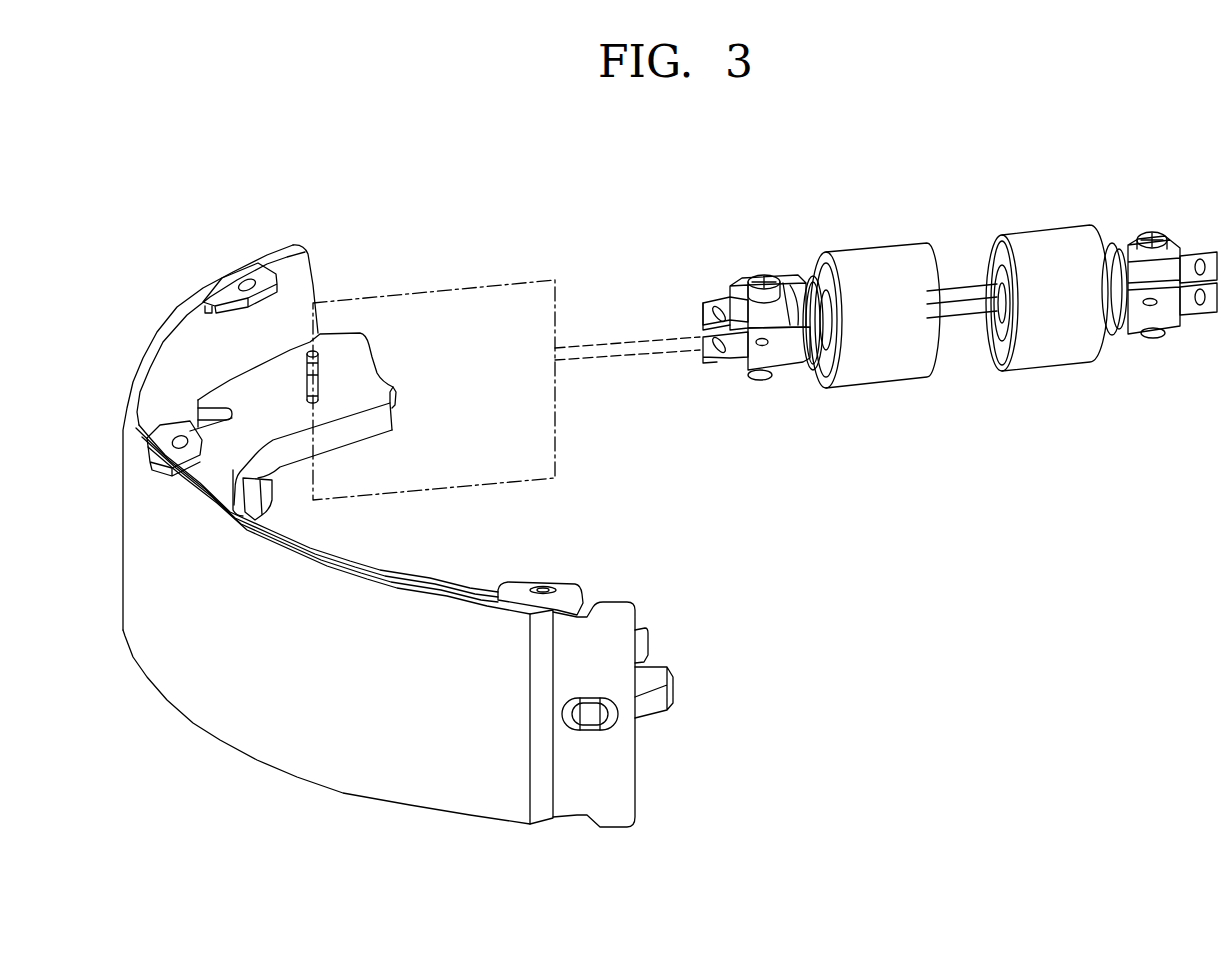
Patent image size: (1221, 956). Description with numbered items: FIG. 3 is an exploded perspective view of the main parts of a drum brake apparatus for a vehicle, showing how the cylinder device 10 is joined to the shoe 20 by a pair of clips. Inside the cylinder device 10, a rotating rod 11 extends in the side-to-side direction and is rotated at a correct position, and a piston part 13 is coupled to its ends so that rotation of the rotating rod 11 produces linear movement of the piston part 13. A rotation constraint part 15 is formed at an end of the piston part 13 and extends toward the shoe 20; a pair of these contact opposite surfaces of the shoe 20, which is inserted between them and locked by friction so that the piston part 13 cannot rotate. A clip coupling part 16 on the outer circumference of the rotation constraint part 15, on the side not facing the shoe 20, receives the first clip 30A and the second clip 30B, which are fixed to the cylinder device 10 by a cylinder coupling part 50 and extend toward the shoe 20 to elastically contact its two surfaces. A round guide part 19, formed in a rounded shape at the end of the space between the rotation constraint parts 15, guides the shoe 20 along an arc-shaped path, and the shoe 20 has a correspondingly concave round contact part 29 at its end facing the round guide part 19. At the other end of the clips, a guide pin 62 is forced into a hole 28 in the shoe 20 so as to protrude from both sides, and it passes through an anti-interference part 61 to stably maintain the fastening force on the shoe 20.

The cylinder device 10 is at (858, 240).
The rotating rod 11 is at (967, 318).
The piston part 13 is at (883, 373).
The rotation constraint part 15 is at (789, 308).
The clip coupling part 16 is at (762, 346).
The round guide part 19 is at (785, 342).
The shoe 20 is at (157, 312).
The hole 28 is at (396, 390).
The round contact part 29 is at (386, 367).
The first clip 30A is at (741, 282).
The second clip 30B is at (732, 367).
The cylinder coupling part 50 is at (765, 272).
The anti-interference part 61 is at (716, 306).
The guide pin 62 is at (318, 336).